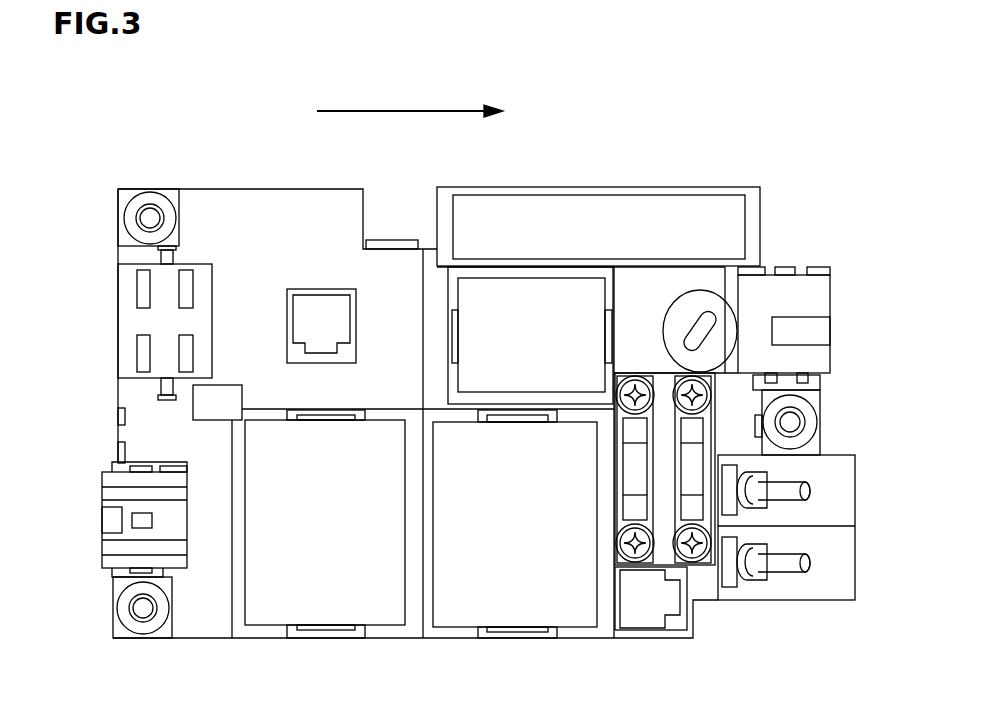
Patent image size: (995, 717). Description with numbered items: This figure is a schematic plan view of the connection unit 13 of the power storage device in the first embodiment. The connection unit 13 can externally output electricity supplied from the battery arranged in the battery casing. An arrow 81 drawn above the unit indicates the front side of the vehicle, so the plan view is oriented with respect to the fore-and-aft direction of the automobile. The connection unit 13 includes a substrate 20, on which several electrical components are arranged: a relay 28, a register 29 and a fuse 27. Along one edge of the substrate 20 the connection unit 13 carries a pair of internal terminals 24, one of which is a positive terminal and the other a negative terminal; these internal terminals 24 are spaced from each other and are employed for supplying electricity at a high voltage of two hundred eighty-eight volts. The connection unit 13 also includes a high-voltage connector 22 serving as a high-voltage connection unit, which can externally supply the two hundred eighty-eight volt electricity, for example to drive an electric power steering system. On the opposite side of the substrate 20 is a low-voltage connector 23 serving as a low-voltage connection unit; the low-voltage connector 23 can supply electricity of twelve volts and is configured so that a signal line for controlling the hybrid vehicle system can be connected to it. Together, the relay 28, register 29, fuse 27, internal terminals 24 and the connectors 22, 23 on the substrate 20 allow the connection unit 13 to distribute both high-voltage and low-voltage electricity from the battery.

The connection unit 13 is at (806, 174).
The substrate 20 is at (266, 208).
The high-voltage connector 22 is at (812, 302).
The low-voltage connector 23 is at (112, 517).
The internal terminals 24 is at (808, 490).
The fuse 27 is at (635, 468).
The relay 28 is at (528, 312).
The register 29 is at (632, 210).
The arrow 81 is at (409, 106).